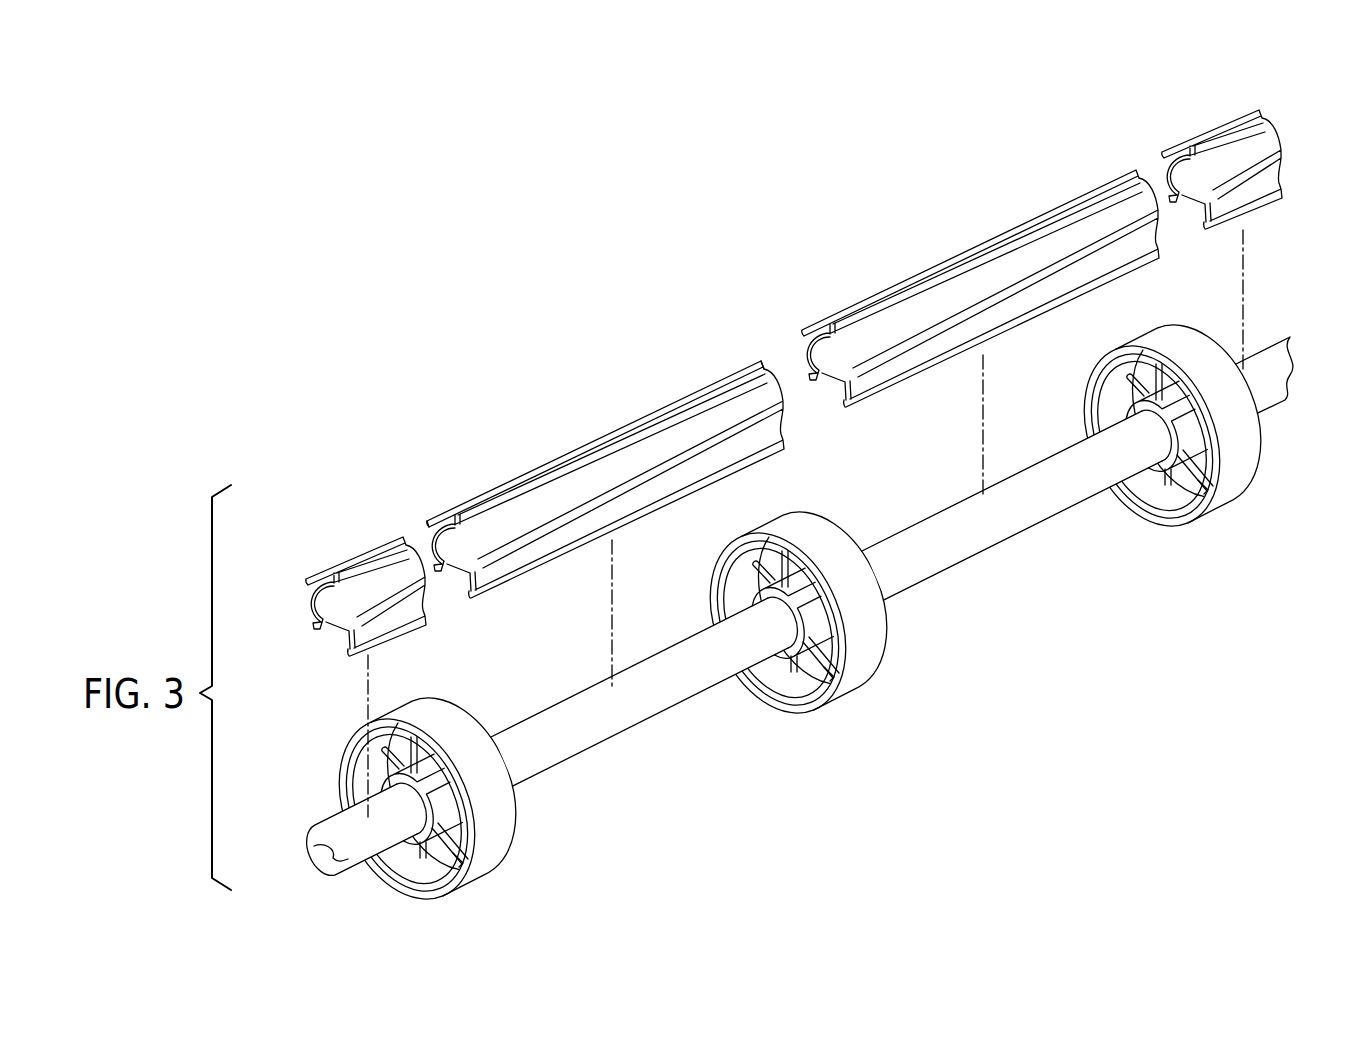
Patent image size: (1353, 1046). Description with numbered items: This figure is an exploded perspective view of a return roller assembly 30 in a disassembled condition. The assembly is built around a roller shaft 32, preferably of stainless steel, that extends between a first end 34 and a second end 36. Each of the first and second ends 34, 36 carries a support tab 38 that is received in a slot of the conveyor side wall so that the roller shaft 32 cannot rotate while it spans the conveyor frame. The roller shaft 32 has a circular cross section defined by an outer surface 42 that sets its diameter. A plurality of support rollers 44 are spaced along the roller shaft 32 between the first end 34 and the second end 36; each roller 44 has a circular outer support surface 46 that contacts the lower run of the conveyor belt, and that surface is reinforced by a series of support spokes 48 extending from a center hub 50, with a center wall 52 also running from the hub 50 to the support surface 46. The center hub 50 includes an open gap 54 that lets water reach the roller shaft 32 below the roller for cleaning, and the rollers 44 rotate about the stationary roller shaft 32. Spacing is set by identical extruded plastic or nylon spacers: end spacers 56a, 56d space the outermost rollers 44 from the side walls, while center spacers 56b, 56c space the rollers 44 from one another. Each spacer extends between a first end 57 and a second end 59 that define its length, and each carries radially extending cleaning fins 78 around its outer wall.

The return roller assembly 30 is at (560, 380).
The roller shaft 32 is at (782, 604).
The first end 34 is at (1277, 355).
The second end 36 is at (318, 823).
The support tab 38 is at (313, 843).
The outer surface 42 is at (903, 590).
The support roller 44 is at (807, 604).
The outer support surface 46 is at (1158, 337).
The support spoke 48 is at (1197, 483).
The center hub 50 is at (1156, 436).
The center wall 52 is at (1113, 387).
The open gap 54 is at (1183, 423).
The end spacer 56a is at (371, 578).
The center spacer 56b is at (527, 503).
The center spacer 56c is at (923, 305).
The end spacer 56d is at (1235, 140).
The first end 57 is at (447, 521).
The second end 59 is at (770, 365).
The cleaning fin 78 is at (322, 575).